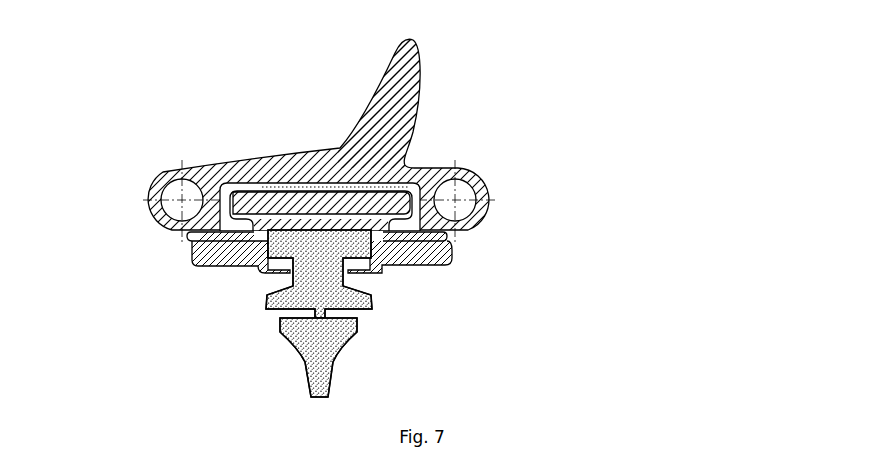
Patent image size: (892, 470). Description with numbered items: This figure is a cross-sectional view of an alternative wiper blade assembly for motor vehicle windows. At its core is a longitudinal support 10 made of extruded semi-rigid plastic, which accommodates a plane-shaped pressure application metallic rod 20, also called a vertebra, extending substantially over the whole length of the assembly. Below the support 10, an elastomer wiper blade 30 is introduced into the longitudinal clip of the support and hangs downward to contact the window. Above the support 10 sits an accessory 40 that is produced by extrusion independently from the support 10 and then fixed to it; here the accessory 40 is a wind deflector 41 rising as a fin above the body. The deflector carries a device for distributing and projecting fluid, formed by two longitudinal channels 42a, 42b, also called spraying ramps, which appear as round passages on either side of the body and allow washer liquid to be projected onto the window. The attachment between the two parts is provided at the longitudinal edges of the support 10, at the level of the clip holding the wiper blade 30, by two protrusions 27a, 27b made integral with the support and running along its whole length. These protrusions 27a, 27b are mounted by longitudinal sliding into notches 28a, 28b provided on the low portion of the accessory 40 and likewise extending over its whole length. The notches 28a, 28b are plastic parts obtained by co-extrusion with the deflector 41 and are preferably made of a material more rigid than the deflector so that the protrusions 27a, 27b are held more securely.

The longitudinal support 10 is at (373, 265).
The pressure application metallic rod 20 is at (250, 197).
The protrusion 27a is at (220, 247).
The protrusion 27b is at (432, 252).
The notch 28a is at (187, 241).
The notch 28b is at (447, 247).
The wiper blade 30 is at (325, 388).
The accessory 40 is at (424, 74).
The wind deflector 41 is at (376, 103).
The longitudinal channel 42a is at (148, 192).
The longitudinal channel 42b is at (489, 182).